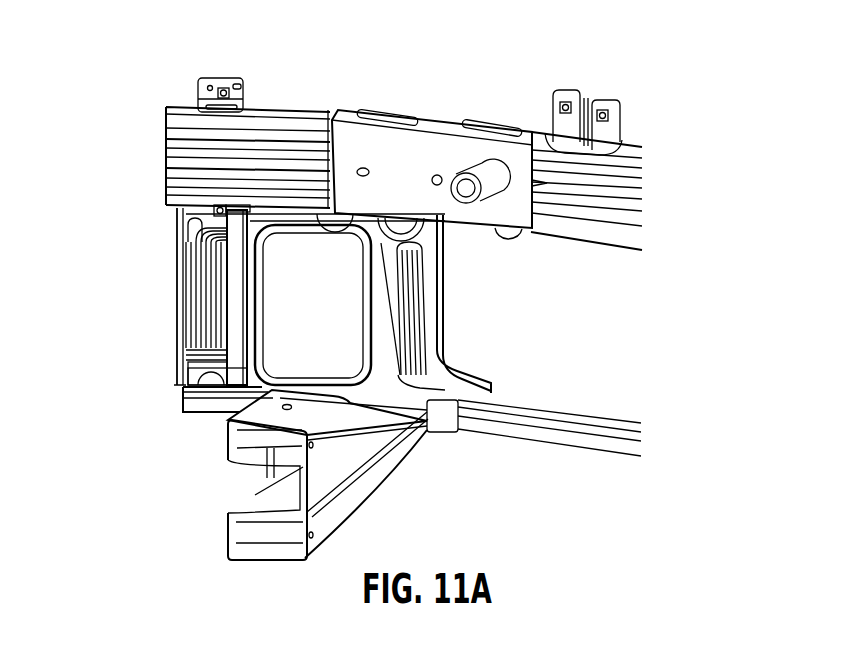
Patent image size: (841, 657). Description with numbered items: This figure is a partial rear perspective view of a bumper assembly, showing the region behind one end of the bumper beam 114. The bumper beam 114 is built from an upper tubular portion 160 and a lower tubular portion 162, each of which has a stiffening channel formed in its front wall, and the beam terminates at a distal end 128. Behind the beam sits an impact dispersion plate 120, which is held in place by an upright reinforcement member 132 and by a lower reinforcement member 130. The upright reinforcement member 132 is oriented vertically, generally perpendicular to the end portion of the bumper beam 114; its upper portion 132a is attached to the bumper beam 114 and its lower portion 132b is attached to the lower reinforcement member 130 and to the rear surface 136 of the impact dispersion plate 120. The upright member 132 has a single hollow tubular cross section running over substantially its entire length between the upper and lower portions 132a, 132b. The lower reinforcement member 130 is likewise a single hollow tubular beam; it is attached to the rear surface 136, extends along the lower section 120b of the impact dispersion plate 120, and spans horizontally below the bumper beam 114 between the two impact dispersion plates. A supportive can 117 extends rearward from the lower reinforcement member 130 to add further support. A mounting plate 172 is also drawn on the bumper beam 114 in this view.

The bumper beam 114 is at (643, 134).
The distal end 128 is at (182, 104).
The upper tubular portion 160 is at (176, 118).
The lower tubular portion 162 is at (178, 188).
The mounting plate 172 is at (403, 173).
The rear surface 136 is at (215, 280).
The upright reinforcement member 132 is at (233, 337).
The upper portion 132a is at (265, 231).
The lower portion 132b is at (233, 373).
The lower reinforcement member 130 is at (208, 407).
The impact dispersion plate 120 is at (465, 303).
The lower section 120b is at (500, 443).
The supportive can 117 is at (404, 480).